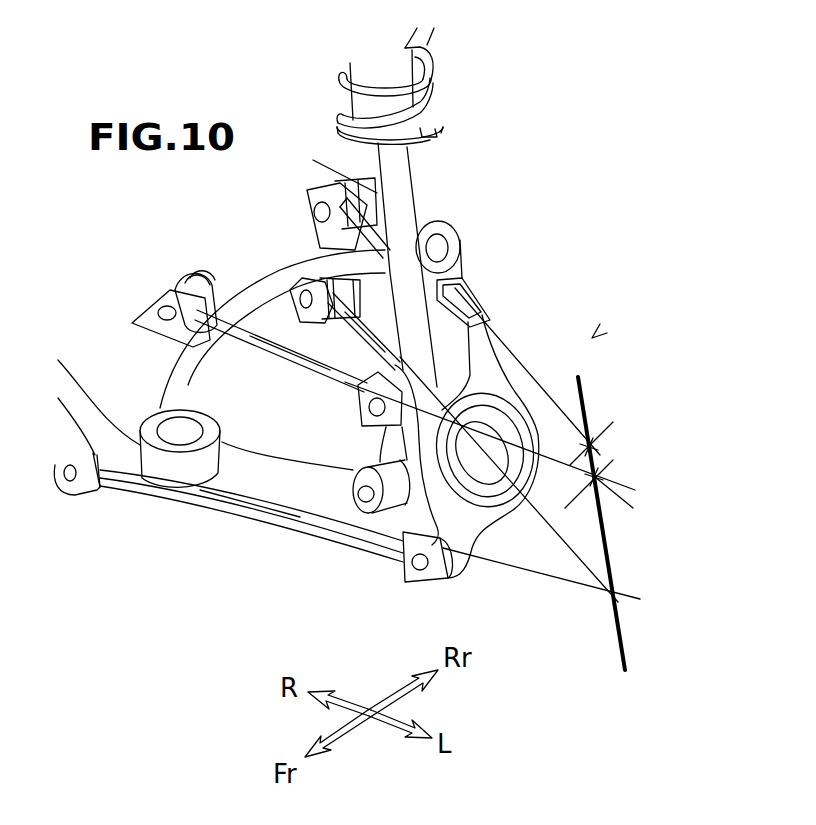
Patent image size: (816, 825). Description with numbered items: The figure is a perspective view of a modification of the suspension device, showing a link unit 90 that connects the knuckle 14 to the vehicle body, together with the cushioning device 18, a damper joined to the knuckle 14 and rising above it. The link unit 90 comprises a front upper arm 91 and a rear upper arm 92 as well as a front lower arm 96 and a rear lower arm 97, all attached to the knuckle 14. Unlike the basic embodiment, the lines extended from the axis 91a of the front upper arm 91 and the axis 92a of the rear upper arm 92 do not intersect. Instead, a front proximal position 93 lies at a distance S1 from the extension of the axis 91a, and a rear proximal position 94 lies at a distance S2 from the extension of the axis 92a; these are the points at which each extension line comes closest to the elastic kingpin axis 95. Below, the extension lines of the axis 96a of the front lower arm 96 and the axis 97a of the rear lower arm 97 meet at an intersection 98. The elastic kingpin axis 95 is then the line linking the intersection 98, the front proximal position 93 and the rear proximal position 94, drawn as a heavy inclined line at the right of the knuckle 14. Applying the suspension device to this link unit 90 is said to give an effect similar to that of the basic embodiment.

The cushioning device 18 is at (400, 170).
The axis of the rear upper arm 92a is at (375, 220).
The rear upper arm 92 is at (433, 280).
The knuckle 14 is at (482, 360).
The rear lower arm 97 is at (402, 345).
The axis of the rear lower arm 97a is at (375, 340).
The front upper arm 91 is at (267, 352).
The axis of the front upper arm 91a is at (320, 368).
The front lower arm 96 is at (243, 520).
The axis of the front lower arm 96a is at (306, 528).
The rear proximal position 94 is at (592, 447).
The front proximal position 93 is at (595, 477).
The intersection 98 is at (610, 598).
The elastic kingpin axis 95 is at (628, 648).
The distance S1 is at (600, 478).
The distance S2 is at (600, 447).
The link unit 90 is at (592, 338).